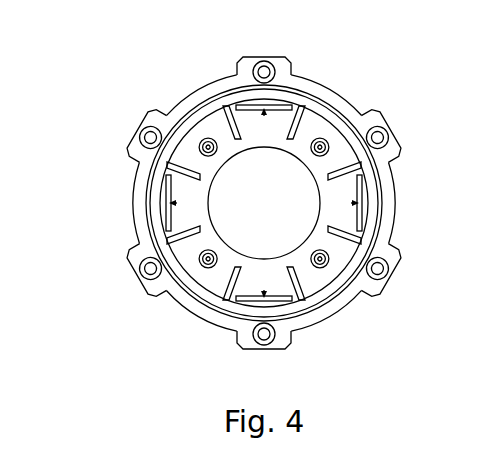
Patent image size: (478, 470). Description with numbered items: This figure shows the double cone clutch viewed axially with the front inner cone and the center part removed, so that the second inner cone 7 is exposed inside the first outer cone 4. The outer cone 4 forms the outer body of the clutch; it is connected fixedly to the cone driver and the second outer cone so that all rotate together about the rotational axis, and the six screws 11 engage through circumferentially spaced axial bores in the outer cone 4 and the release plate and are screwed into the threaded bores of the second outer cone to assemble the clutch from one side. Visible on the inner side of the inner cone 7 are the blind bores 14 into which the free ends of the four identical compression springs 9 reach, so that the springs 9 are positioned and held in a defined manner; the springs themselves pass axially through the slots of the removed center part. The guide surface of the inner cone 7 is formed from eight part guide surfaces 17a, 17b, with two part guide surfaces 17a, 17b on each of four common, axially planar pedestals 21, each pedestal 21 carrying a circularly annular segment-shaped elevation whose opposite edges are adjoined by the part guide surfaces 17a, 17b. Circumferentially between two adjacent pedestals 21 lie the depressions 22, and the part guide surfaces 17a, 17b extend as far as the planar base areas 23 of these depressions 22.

The first outer cone 4 is at (323, 85).
The second inner cone 7 is at (383, 108).
The compression springs 9 is at (218, 152).
The screws 11 is at (243, 90).
The blind bore 14 is at (190, 142).
The part guide surface 17a is at (318, 135).
The part guide surface 17b is at (209, 130).
The pedestal 21 is at (364, 98).
The depression 22 is at (270, 57).
The base area 23 is at (253, 134).